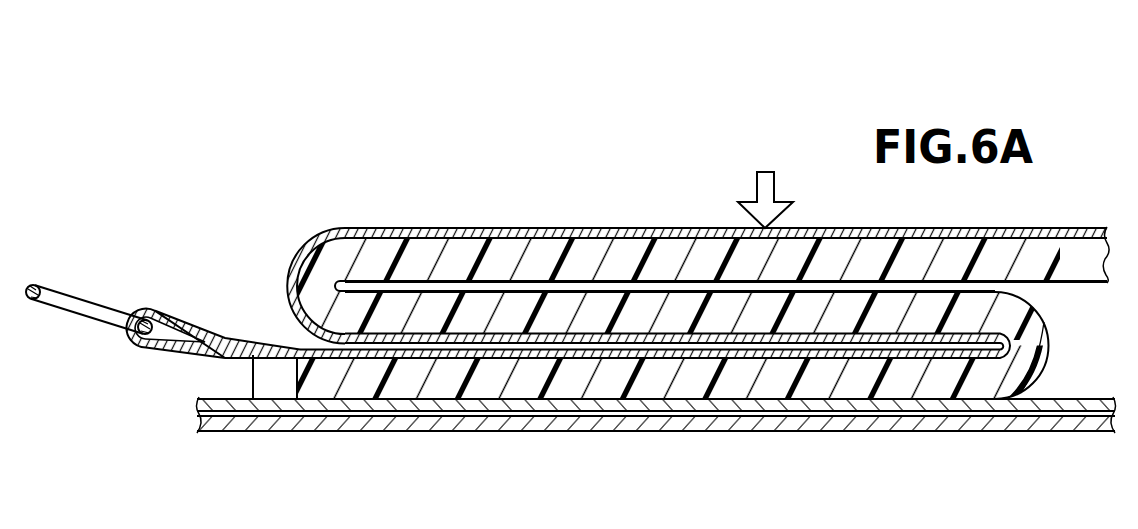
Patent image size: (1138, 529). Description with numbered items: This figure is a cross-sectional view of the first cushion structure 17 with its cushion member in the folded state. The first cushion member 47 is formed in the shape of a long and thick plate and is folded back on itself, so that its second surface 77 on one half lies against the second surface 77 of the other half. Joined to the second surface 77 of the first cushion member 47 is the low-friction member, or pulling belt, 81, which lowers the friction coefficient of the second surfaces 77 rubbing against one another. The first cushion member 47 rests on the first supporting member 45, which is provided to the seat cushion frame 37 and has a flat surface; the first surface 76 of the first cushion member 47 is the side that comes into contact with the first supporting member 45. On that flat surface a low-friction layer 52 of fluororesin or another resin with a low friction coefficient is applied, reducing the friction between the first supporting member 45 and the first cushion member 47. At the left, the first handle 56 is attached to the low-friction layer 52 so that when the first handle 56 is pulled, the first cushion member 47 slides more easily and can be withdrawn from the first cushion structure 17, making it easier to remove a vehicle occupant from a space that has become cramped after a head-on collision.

The first cushion structure 17 is at (347, 179).
The first cushion member 47 is at (512, 228).
The second surface 77 is at (620, 247).
The low-friction member (pulling belt) 81 is at (710, 228).
The first handle 56 is at (78, 290).
The low-friction layer 52 is at (245, 340).
The seat cushion frame 37 is at (574, 444).
The first supporting member 45 is at (295, 431).
The first surface 76 is at (652, 413).